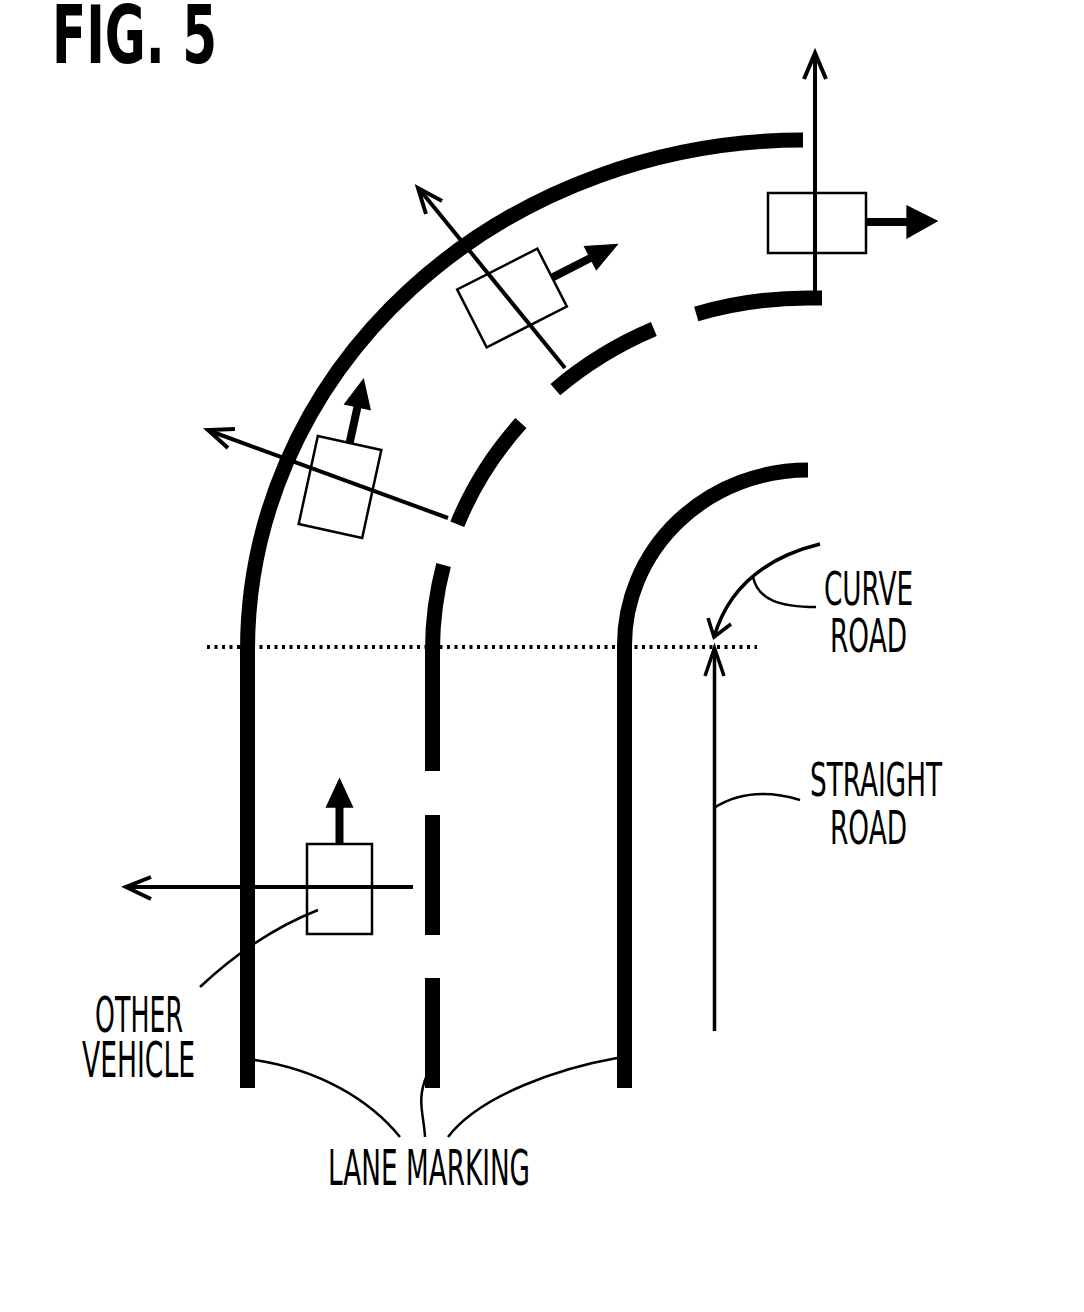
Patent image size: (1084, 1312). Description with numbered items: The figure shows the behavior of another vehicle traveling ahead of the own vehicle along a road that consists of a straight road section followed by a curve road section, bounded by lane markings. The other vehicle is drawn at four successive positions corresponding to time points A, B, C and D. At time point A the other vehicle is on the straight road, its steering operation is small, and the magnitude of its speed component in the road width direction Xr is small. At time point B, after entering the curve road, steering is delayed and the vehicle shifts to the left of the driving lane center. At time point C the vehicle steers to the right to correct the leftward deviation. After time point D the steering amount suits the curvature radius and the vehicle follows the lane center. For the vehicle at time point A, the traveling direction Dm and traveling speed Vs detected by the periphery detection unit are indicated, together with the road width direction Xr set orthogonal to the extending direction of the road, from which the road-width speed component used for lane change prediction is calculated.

The time point A is at (310, 897).
The time point B is at (327, 538).
The time point C is at (560, 302).
The time point D is at (842, 253).
The road width direction Xr is at (180, 886).
The traveling direction Dm is at (228, 809).
The traveling speed Vs is at (333, 818).